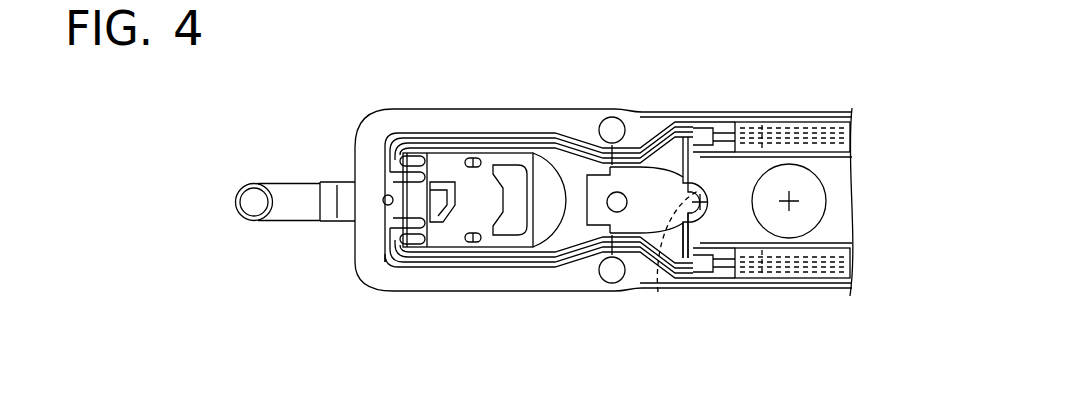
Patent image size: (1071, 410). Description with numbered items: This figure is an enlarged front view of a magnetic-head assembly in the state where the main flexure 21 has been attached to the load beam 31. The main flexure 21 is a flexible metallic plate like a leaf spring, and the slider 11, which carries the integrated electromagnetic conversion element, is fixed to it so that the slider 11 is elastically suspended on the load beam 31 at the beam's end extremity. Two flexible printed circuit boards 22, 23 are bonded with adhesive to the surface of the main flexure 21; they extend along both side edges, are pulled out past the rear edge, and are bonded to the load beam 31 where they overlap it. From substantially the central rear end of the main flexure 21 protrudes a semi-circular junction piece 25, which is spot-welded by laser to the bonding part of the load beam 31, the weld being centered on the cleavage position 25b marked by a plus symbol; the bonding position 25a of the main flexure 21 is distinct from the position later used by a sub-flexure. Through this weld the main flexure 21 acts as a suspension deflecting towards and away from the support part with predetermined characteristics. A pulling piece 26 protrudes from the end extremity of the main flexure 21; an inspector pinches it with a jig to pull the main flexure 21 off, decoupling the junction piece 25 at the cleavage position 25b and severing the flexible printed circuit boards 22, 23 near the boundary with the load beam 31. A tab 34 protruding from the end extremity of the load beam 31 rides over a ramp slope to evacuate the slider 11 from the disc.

The slider 11 is at (448, 172).
The main flexure 21 is at (533, 122).
The flexible printed circuit board 22 is at (818, 130).
The flexible printed circuit board 23 is at (817, 268).
The junction piece 25 is at (712, 128).
The bonding position 25a is at (697, 283).
The cleavage position 25b is at (658, 292).
The pulling piece 26 is at (348, 195).
The load beam 31 is at (733, 185).
The tab 34 is at (278, 187).